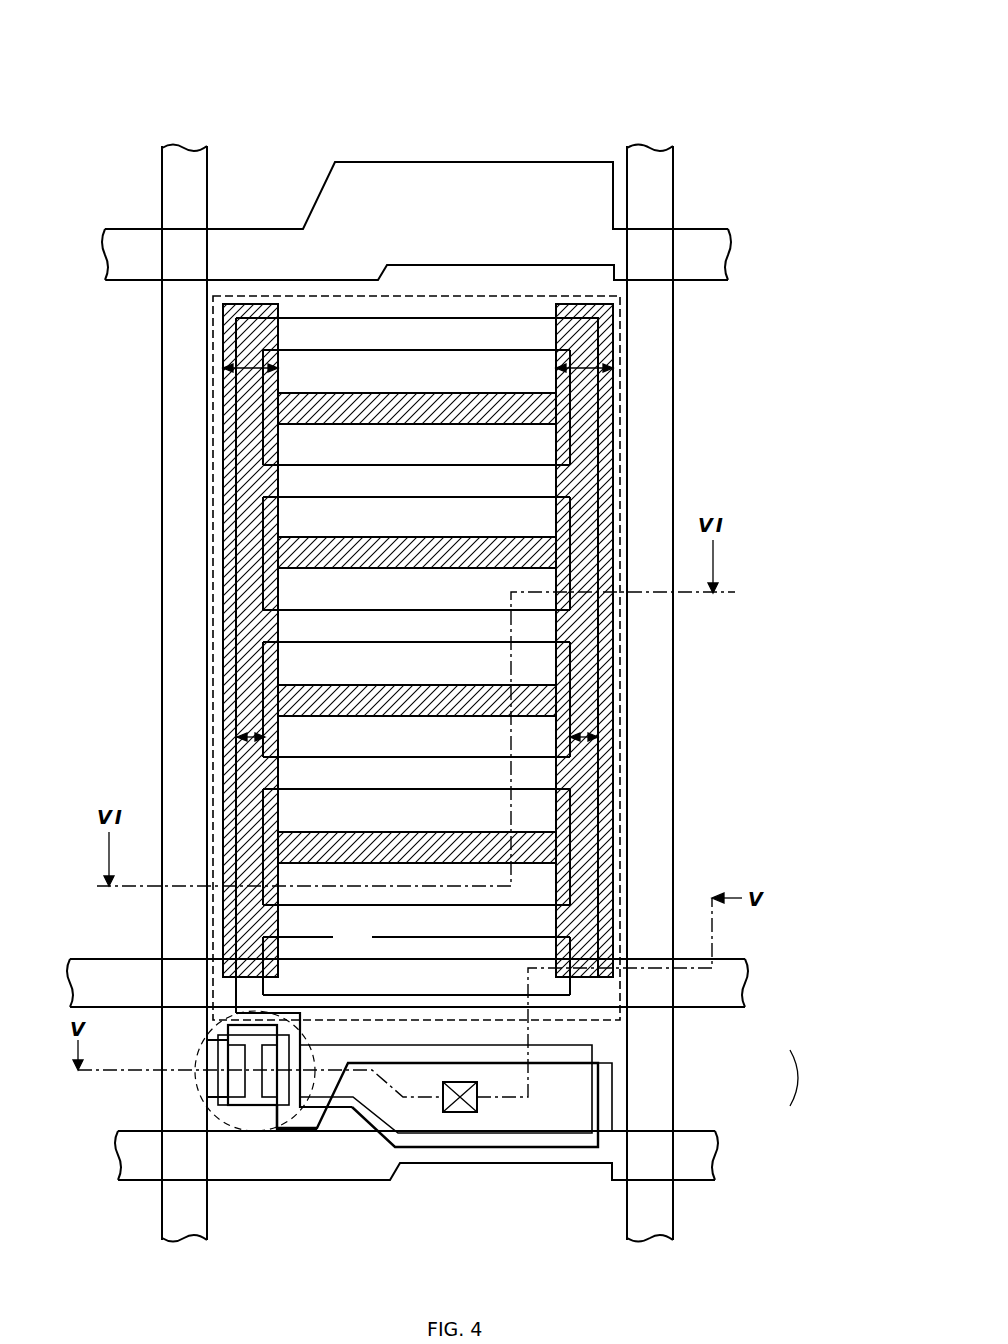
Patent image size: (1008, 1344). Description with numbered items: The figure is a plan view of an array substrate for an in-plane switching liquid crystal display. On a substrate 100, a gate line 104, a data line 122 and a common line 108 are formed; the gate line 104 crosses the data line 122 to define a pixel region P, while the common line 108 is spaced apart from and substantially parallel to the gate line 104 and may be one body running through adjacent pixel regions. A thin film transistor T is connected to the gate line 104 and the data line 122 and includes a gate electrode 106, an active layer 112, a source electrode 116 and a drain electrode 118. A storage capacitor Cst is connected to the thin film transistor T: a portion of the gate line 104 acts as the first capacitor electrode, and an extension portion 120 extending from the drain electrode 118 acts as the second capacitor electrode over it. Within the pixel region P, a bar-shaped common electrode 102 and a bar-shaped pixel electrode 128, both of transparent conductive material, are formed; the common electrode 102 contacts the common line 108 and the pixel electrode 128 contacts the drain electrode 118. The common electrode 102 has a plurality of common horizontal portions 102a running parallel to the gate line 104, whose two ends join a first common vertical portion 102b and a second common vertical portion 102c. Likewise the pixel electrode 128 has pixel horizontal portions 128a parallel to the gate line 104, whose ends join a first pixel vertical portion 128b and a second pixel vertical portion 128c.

The substrate 100 is at (733, 1224).
The common electrode 102 is at (523, 82).
The common horizontal portions 102a is at (396, 383).
The first common vertical portion 102b is at (253, 364).
The second common vertical portion 102c is at (591, 362).
The gate line 104 is at (705, 1150).
The gate electrode 106 is at (287, 1012).
The common line 108 is at (735, 978).
The active layer 112 is at (265, 1108).
The source electrode 116 is at (237, 1098).
The drain electrode 118 is at (318, 1112).
The extension portion 120 is at (600, 1095).
The data line 122 is at (176, 145).
The pixel electrode 128 is at (490, 722).
The pixel horizontal portions 128a is at (426, 897).
The first pixel vertical portion 128b is at (278, 737).
The second pixel vertical portion 128c is at (570, 737).
The pixel region P is at (622, 670).
The thin film transistor T is at (210, 1041).
The storage capacitor Cst is at (813, 1078).